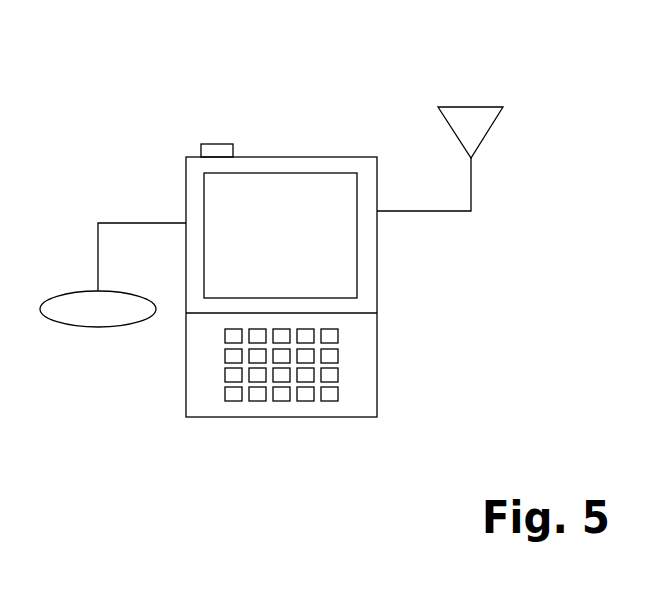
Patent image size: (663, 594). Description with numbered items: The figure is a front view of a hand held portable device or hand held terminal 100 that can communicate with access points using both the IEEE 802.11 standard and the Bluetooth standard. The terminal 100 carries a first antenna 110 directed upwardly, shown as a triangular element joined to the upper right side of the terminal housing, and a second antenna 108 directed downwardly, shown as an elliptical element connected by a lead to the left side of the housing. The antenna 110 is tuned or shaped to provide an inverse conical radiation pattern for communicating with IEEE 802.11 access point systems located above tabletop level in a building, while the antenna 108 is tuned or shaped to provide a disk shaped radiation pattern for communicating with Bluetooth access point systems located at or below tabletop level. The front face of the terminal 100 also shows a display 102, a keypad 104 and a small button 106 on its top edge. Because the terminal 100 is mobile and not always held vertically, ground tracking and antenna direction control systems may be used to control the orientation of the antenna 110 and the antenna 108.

The hand held terminal 100 is at (352, 82).
The display screen 102 is at (289, 193).
The keypad 104 is at (352, 355).
The button / switch 106 is at (213, 143).
The second antenna 108 is at (98, 328).
The first antenna 110 is at (483, 105).